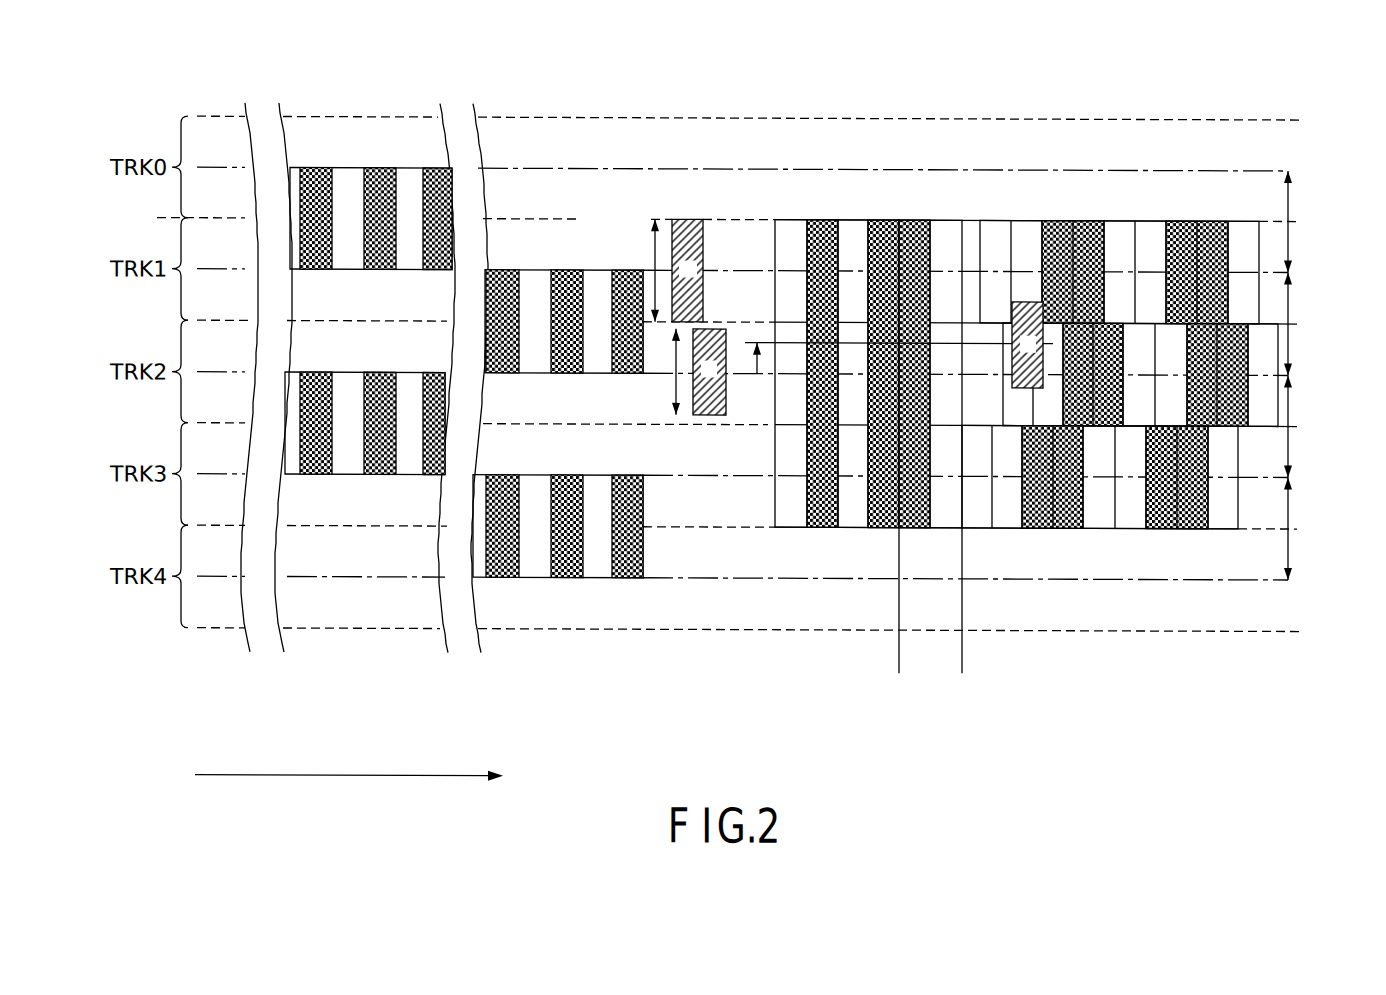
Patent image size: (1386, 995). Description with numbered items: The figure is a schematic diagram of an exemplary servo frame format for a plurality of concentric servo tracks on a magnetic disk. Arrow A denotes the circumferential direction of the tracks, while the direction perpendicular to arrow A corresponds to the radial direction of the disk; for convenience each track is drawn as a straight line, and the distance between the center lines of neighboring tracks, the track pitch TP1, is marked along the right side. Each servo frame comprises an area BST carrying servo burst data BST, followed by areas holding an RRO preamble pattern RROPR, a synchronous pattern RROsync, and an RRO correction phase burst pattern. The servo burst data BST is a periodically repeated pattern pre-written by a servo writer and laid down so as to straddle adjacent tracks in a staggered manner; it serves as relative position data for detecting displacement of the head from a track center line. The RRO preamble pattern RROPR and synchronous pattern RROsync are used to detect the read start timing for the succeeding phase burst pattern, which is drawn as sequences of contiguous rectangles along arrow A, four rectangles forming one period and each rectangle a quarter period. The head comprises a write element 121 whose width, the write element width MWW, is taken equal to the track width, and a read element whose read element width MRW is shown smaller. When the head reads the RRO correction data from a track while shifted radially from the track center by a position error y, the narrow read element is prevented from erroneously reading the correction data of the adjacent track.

The write element 121 is at (690, 217).
The servo burst data area BST is at (647, 686).
The RRO preamble pattern RROPR is at (898, 685).
The synchronous pattern RROsync is at (962, 685).
The track pitch TP1 is at (1316, 375).
The write element width MWW is at (620, 265).
The read element width MRW is at (643, 372).
The position error y is at (899, 375).
The circumferential direction arrow A is at (239, 774).